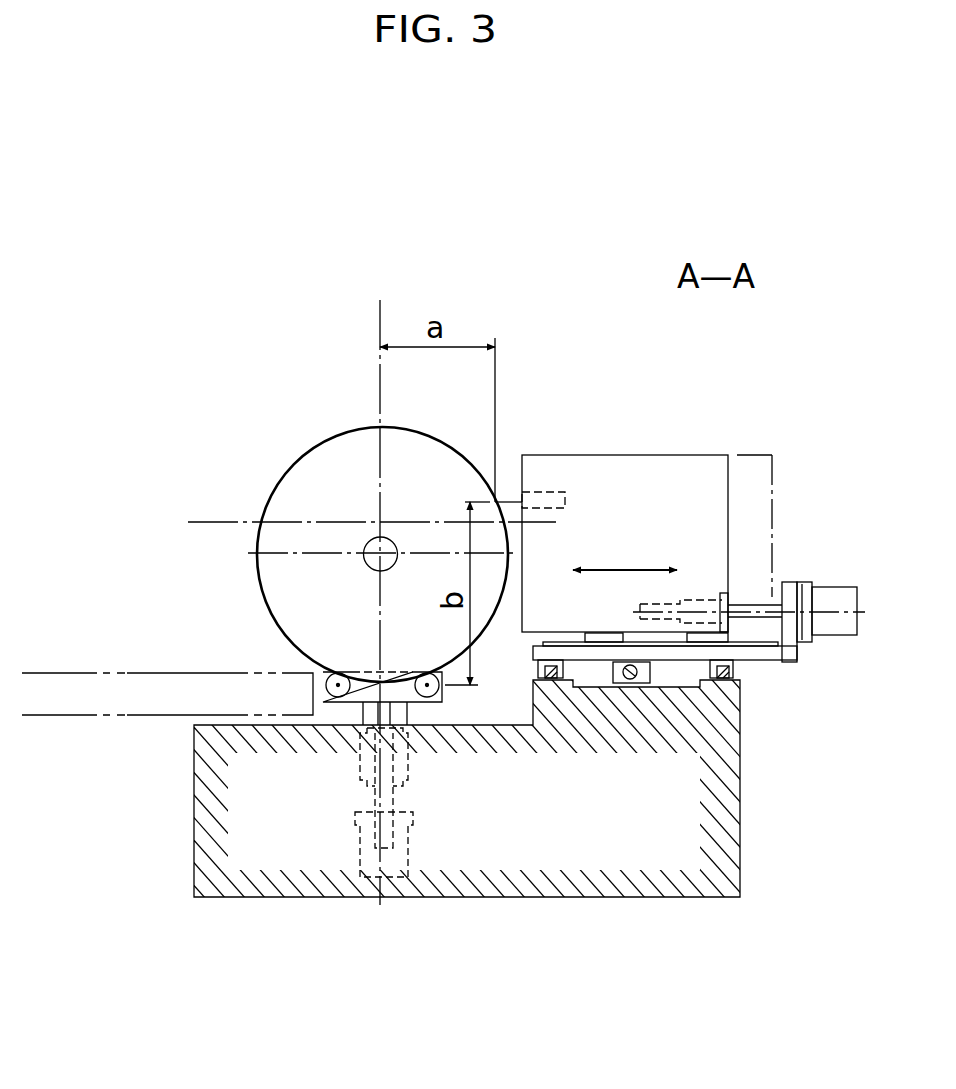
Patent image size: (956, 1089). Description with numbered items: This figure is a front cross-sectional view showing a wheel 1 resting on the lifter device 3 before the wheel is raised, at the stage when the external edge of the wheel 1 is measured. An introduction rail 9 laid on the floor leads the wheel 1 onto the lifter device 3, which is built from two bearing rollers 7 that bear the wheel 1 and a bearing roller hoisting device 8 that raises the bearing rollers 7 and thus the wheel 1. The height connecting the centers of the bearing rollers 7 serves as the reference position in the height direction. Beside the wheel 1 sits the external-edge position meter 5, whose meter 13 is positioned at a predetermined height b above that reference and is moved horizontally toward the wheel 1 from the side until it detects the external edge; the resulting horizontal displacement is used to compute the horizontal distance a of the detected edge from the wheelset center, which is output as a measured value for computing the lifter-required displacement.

The wheel 1 is at (306, 465).
The lifter device 3 is at (322, 843).
The external-edge position meter 5 is at (668, 443).
The bearing roller 7 is at (338, 698).
The bearing roller hoisting device 8 is at (430, 829).
The introduction rail 9 is at (84, 676).
The meter 13 is at (565, 465).